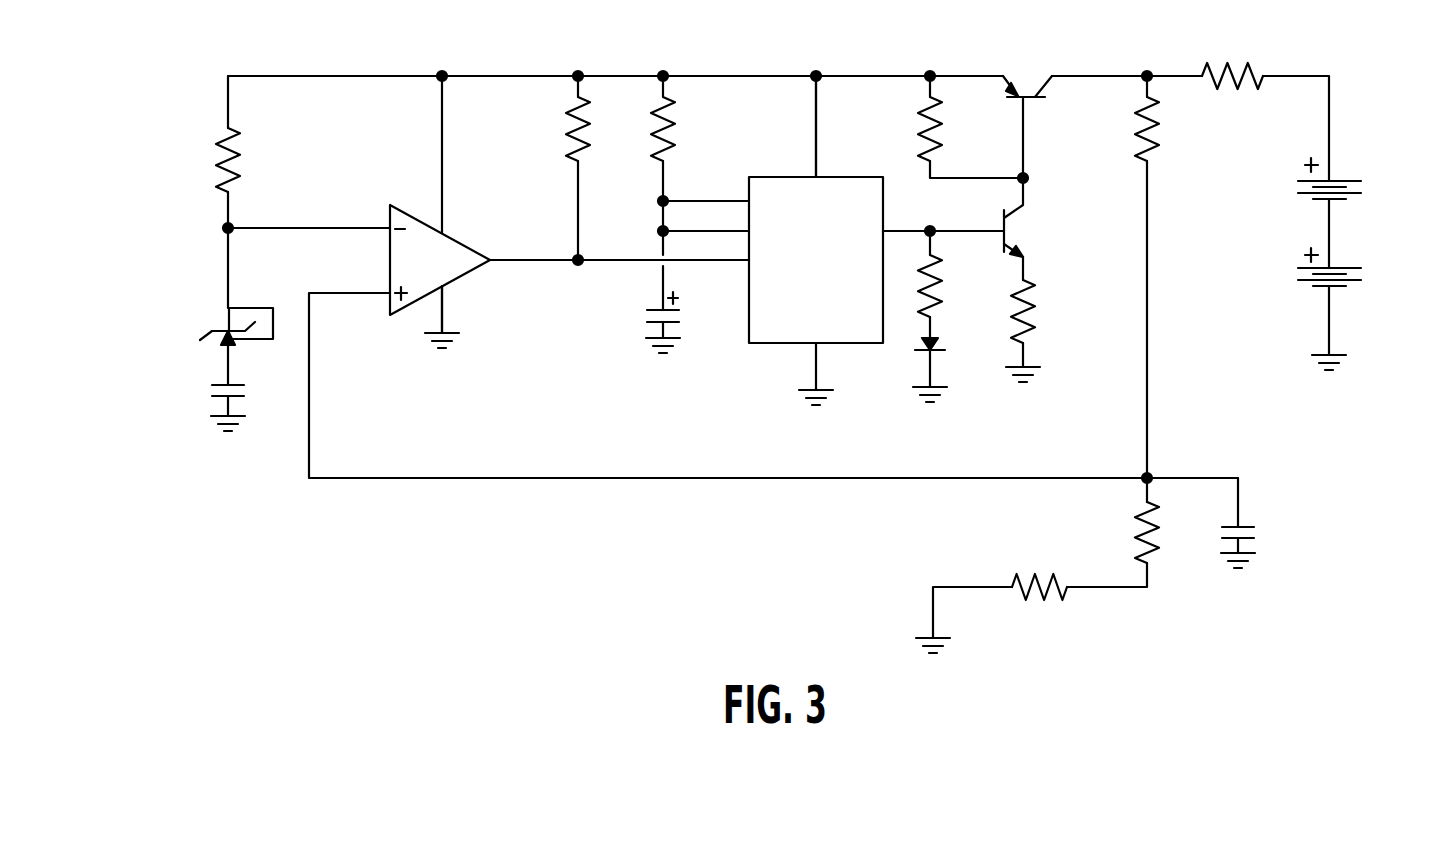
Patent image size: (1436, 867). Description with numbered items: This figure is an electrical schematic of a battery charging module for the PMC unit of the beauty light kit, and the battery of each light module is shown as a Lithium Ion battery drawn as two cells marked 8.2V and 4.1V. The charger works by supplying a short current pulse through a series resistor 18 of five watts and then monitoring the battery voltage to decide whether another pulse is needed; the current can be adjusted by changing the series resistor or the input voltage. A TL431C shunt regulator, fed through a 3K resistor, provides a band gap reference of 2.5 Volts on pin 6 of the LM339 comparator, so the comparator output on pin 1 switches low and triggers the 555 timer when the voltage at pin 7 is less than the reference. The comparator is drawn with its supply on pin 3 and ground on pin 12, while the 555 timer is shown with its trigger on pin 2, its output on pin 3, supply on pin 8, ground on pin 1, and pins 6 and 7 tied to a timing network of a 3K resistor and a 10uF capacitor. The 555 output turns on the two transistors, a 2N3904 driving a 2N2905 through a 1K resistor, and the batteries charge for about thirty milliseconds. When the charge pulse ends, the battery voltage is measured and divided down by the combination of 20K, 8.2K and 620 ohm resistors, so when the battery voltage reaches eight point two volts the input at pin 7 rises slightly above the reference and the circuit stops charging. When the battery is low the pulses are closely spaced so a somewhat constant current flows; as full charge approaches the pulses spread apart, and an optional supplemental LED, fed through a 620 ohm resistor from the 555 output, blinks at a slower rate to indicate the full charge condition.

The series resistor 3K is at (450, 193).
The comparator LM339 is at (765, 277).
The band gap voltage reference 2.5 Volts is at (256, 230).
The TL431 shunt regulator TL431C is at (192, 369).
The 555 timer 555 is at (816, 260).
The timing capacitor 10uF is at (631, 322).
The resistor 1K is at (981, 229).
The transistor 2N2905 is at (1029, 105).
The transistor 2N3904 is at (1061, 217).
The 620 ohm resistor 620 is at (1031, 442).
The supplemental LED is at (955, 367).
The 20K resistor 20K is at (1119, 277).
The series resistor 18 is at (1237, 74).
The Lithium Ion Battery 8.2V is at (1344, 202).
The Lithium Ion Battery 4.1V is at (1331, 326).
The 8.2K resistor 8.2K is at (1116, 520).
The pin 1 is at (664, 313).
The pin 2 is at (673, 262).
The pin 3 is at (713, 219).
The pin 6 is at (570, 223).
The pin 7 is at (570, 257).
The pin 8 is at (816, 144).
The pin 12 is at (468, 309).